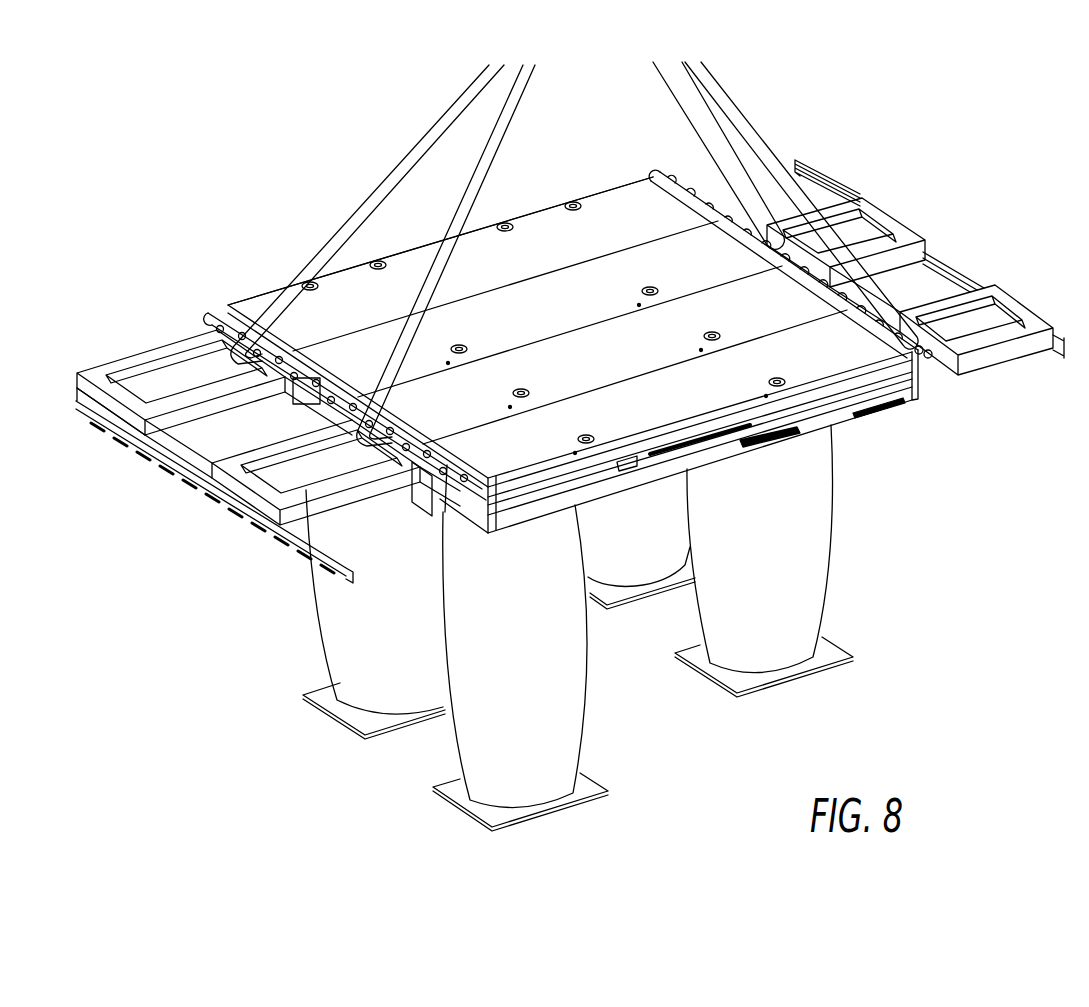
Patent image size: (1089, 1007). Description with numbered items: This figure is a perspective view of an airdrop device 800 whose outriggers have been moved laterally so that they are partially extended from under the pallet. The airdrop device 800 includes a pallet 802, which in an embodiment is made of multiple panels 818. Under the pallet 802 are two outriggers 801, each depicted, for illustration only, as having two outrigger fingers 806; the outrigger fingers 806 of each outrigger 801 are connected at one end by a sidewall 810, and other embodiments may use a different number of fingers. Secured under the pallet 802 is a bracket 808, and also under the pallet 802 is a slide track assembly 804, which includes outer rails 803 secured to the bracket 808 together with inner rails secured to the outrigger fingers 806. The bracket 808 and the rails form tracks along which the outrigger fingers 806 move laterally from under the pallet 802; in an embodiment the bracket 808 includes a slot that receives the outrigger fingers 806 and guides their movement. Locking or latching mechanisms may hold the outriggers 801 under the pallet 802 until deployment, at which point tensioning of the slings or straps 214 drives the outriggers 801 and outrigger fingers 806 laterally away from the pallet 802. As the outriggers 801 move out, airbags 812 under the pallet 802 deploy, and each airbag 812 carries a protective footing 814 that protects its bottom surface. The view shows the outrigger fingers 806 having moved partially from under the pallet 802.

The straps 214 is at (377, 194).
The airdrop device 800 is at (617, 190).
The outrigger 801 is at (187, 330).
The pallet 802 is at (556, 208).
The outer rails 803 is at (847, 413).
The slide track assembly 804 is at (834, 420).
The outrigger fingers 806 is at (137, 356).
The bracket 808 is at (298, 412).
The sidewall 810 is at (218, 486).
The airbags 812 is at (567, 723).
The protective footing 814 is at (310, 697).
The panels 818 is at (876, 405).